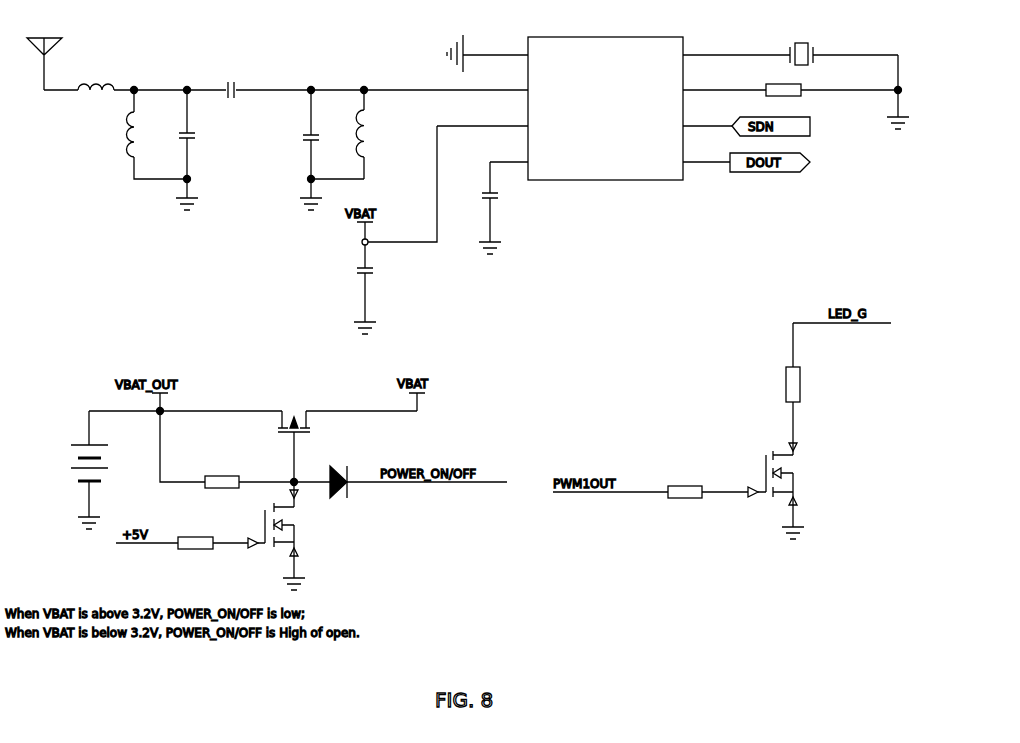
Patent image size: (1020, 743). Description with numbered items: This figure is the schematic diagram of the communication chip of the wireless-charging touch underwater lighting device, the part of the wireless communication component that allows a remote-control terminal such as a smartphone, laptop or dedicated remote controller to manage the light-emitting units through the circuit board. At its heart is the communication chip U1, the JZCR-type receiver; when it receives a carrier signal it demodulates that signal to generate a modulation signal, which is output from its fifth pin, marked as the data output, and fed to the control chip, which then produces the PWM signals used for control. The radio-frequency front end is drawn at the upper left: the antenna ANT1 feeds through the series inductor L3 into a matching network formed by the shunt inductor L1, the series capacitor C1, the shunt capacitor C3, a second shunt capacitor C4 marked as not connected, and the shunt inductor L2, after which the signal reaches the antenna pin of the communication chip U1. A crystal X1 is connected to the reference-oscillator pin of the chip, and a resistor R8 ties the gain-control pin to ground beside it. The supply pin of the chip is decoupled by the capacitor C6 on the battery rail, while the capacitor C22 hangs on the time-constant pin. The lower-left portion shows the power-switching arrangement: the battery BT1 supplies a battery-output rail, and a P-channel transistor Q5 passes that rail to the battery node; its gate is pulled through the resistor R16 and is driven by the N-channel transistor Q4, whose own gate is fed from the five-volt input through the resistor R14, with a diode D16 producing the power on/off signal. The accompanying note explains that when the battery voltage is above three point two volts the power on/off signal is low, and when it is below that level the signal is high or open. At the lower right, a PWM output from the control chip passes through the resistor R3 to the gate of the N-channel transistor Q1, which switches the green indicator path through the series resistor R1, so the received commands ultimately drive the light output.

The antenna ANT1 is at (44, 55).
The inductor 0R (S-0603) L3 is at (73, 91).
The inductor 22nH L1 is at (84, 138).
The capacitor 2.7pF C1 is at (276, 74).
The capacitor 6.2pF C3 is at (224, 169).
The capacitor NC C4 is at (304, 172).
The inductor 33nH L2 is at (405, 129).
The communication chip U1 is at (613, 115).
The capacitor 1uF C22 is at (450, 208).
The capacitor 1uF C6 is at (326, 289).
The crystal 13.52127MHz X1 is at (846, 56).
The resistor 0R R8 is at (837, 98).
The battery DC3.7V BT1 is at (59, 470).
The resistor 470K R16 is at (249, 485).
The resistor 100K R14 is at (190, 545).
The P-MOSFET CJ3415 Q5 is at (351, 436).
The diode INS819HW7 D16 is at (416, 482).
The N-MOSFET 2N7002 Q4 is at (332, 536).
The resistor 15R R1 is at (830, 411).
The N-MOSFET 2N7002 Q1 is at (829, 491).
The resistor 1K R3 is at (659, 494).